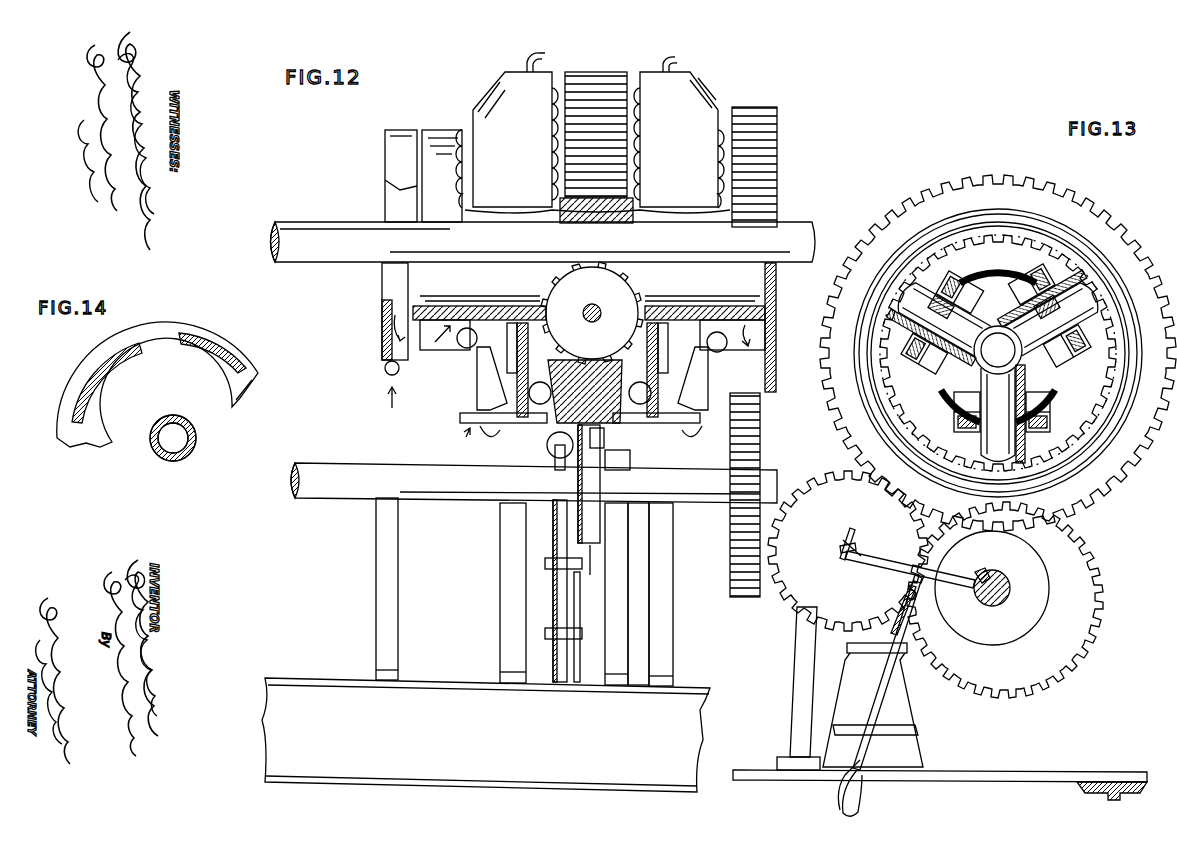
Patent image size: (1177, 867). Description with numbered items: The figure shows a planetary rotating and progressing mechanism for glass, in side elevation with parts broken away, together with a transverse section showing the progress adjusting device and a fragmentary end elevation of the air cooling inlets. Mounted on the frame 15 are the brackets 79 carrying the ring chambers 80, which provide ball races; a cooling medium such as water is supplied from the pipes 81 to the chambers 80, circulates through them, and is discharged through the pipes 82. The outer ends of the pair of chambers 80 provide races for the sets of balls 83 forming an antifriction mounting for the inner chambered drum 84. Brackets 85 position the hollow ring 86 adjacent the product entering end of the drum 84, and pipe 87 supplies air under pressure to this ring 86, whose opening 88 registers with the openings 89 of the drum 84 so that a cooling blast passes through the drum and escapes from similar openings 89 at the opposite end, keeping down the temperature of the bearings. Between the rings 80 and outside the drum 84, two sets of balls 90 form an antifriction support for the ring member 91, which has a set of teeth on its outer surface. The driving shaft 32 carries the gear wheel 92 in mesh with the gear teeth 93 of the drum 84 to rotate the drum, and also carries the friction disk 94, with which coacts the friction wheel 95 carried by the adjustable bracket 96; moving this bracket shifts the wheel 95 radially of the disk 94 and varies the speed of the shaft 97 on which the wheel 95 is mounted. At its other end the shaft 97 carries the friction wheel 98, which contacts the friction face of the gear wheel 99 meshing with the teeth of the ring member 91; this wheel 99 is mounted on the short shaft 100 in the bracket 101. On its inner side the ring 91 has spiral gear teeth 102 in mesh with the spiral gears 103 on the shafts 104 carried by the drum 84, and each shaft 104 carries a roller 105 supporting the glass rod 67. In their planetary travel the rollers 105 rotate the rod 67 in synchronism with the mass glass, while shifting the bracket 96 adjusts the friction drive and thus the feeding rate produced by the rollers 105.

In FIG. 12, the frame 15 is at (285, 678).
In FIG. 13, the frame 15 is at (1095, 780).
In FIG. 12, the driving shaft 32 is at (335, 500).
In FIG. 13, the driving shaft 32 is at (1010, 588).
In FIG. 12, the glass rod 67 is at (345, 212).
In FIG. 14, the glass rod 67 is at (197, 437).
In FIG. 13, the glass rod 67 is at (822, 200).
In FIG. 12, the brackets 79 is at (499, 608).
In FIG. 12, the ring chambers 80 is at (478, 398).
In FIG. 12, the pipes 81 is at (492, 428).
In FIG. 12, the pipes 82 is at (548, 53).
In FIG. 12, the sets of balls 83 is at (465, 348).
In FIG. 12, the chambered drum 84 is at (442, 130).
In FIG. 14, the chambered drum 84 is at (232, 338).
In FIG. 13, the chambered drum 84 is at (995, 273).
In FIG. 12, the brackets 85 is at (376, 560).
In FIG. 12, the ring 86 is at (385, 136).
In FIG. 12, the pipe 87 is at (385, 372).
In FIG. 12, the opening 88 is at (400, 330).
In FIG. 12, the openings 89 is at (392, 312).
In FIG. 14, the openings 89 is at (135, 355).
In FIG. 12, the sets of balls 90 is at (553, 118).
In FIG. 12, the ring member 91 is at (606, 75).
In FIG. 13, the ring member 91 is at (914, 212).
In FIG. 12, the gear wheel 92 is at (730, 566).
In FIG. 13, the gear wheel 92 is at (1022, 696).
In FIG. 12, the gear teeth 93 is at (766, 108).
In FIG. 12, the friction disk 94 is at (590, 548).
In FIG. 13, the friction disk 94 is at (1050, 590).
In FIG. 12, the friction wheel 95 is at (562, 468).
In FIG. 13, the friction wheel 95 is at (1008, 600).
In FIG. 12, the adjustable bracket 96 is at (553, 540).
In FIG. 13, the adjustable bracket 96 is at (905, 706).
In FIG. 13, the shaft 97 is at (858, 560).
In FIG. 12, the friction wheel 98 is at (550, 445).
In FIG. 13, the friction wheel 98 is at (850, 538).
In FIG. 12, the gear wheel 99 is at (600, 435).
In FIG. 13, the gear wheel 99 is at (802, 608).
In FIG. 12, the short shaft 100 is at (618, 456).
In FIG. 12, the bracket 101 is at (630, 560).
In FIG. 13, the bracket 101 is at (800, 707).
In FIG. 12, the spiral gear teeth 102 is at (633, 220).
In FIG. 13, the spiral gear teeth 102 is at (1110, 425).
In FIG. 13, the spiral gears 103 is at (1062, 300).
In FIG. 13, the shafts 104 is at (926, 362).
In FIG. 13, the rollers 105 is at (1080, 322).